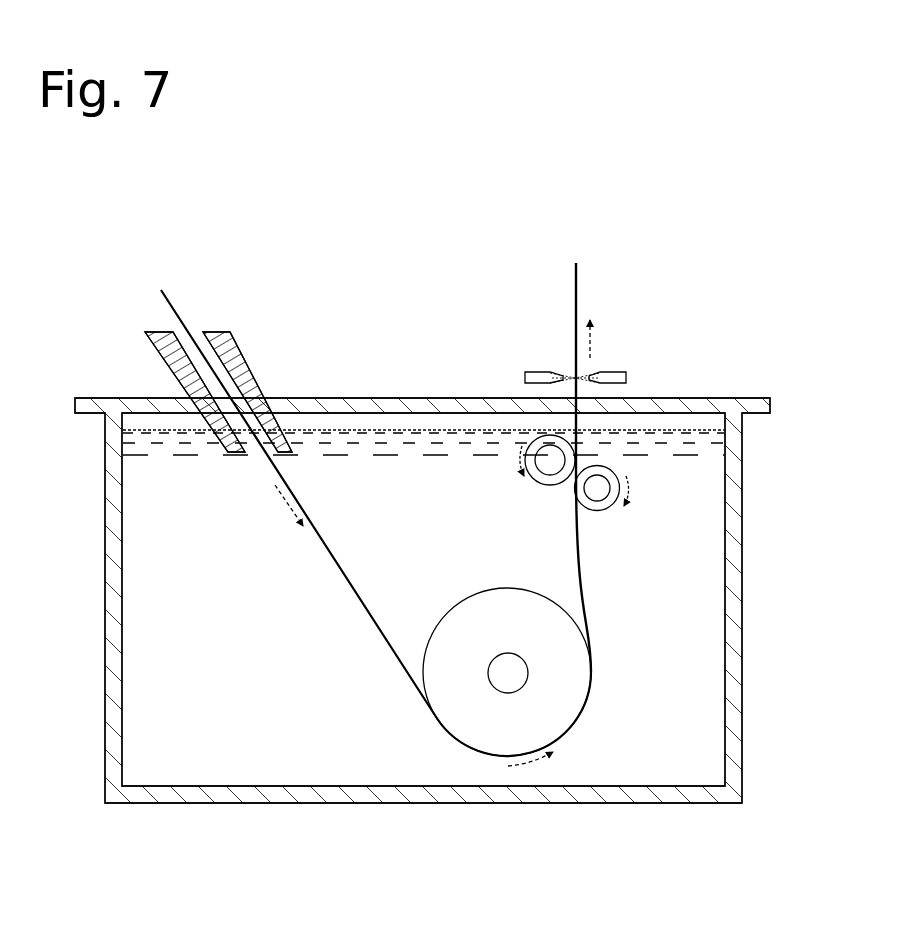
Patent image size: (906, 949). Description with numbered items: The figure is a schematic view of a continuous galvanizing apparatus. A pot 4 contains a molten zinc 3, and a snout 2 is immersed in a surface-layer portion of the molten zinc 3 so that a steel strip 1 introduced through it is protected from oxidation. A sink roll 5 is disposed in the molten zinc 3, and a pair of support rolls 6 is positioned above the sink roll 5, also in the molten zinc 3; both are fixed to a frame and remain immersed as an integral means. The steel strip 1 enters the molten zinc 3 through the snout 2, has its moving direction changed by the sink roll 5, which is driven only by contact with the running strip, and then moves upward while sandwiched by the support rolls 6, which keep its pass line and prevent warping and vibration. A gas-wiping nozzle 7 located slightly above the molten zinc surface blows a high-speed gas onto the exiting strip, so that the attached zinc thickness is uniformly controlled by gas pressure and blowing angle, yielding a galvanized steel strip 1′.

The steel strip 1 is at (176, 312).
The galvanized steel strip 1′ is at (574, 287).
The snout 2 is at (242, 353).
The molten zinc 3 is at (245, 625).
The pot 4 is at (742, 576).
The sink roll 5 is at (478, 593).
The support rolls 6 is at (592, 512).
The gas-wiping nozzle 7 is at (616, 372).